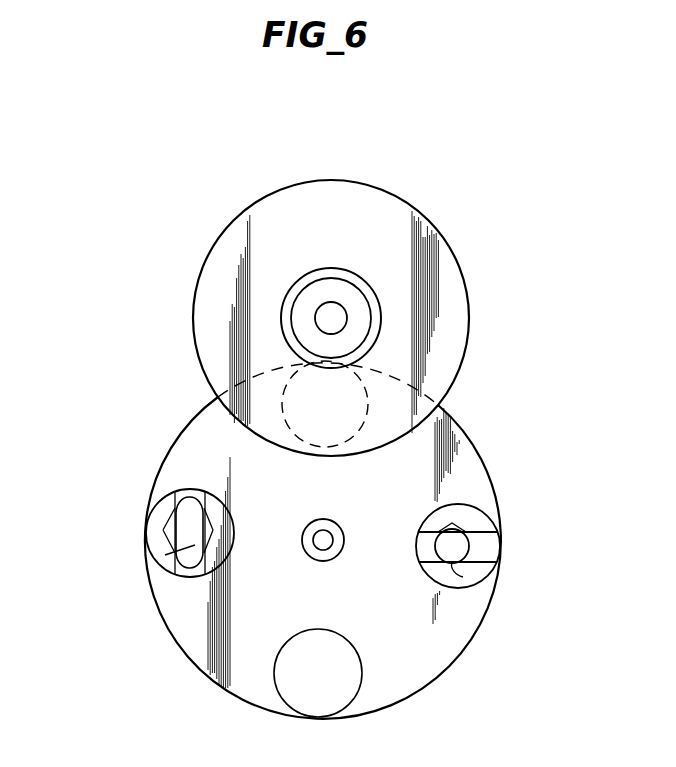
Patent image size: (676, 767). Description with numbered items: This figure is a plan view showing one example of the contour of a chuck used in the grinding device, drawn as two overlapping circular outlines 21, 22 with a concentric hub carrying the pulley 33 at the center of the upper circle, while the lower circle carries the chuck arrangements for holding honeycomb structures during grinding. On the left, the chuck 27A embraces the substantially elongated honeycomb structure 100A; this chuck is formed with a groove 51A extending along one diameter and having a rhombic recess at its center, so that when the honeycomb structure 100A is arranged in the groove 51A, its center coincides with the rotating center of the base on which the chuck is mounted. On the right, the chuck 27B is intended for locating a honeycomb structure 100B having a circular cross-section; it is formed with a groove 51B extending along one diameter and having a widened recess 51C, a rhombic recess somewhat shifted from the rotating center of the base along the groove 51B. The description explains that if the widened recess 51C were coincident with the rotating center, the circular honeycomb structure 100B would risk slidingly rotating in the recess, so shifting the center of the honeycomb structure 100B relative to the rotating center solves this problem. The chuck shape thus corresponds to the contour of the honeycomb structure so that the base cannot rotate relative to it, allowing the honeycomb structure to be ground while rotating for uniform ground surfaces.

The base plate 21 is at (477, 442).
The rotary disc 22 is at (462, 265).
The pulley 33 is at (372, 337).
The chuck 27A is at (170, 502).
The chuck 27B is at (482, 510).
The groove 51A is at (197, 494).
The groove 51B is at (417, 547).
The widened recess 51C is at (465, 577).
The honeycomb structure 100A is at (178, 537).
The honeycomb structure 100B is at (462, 546).